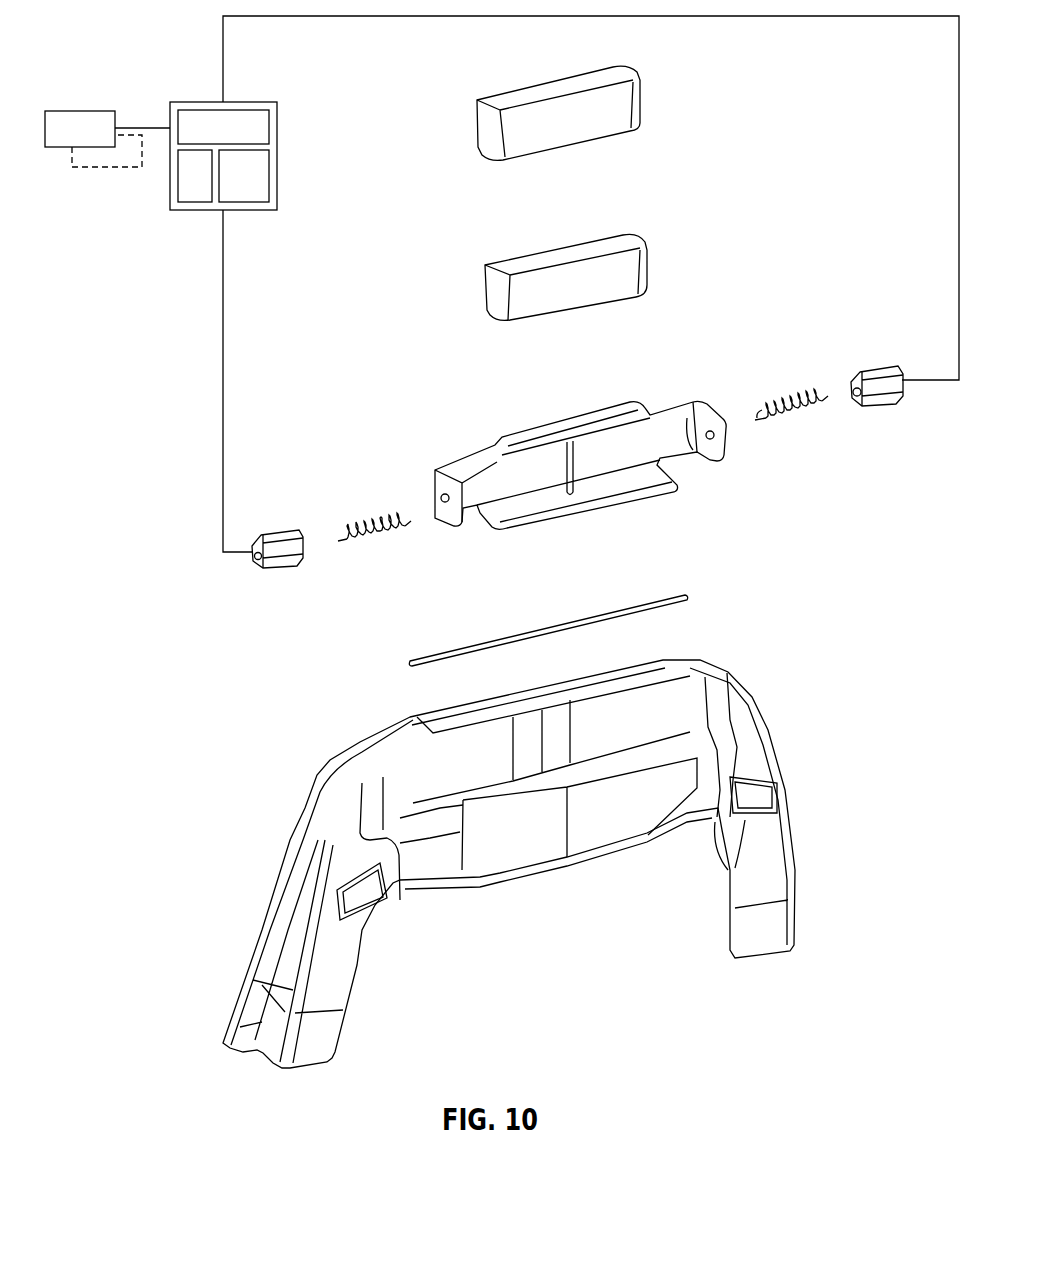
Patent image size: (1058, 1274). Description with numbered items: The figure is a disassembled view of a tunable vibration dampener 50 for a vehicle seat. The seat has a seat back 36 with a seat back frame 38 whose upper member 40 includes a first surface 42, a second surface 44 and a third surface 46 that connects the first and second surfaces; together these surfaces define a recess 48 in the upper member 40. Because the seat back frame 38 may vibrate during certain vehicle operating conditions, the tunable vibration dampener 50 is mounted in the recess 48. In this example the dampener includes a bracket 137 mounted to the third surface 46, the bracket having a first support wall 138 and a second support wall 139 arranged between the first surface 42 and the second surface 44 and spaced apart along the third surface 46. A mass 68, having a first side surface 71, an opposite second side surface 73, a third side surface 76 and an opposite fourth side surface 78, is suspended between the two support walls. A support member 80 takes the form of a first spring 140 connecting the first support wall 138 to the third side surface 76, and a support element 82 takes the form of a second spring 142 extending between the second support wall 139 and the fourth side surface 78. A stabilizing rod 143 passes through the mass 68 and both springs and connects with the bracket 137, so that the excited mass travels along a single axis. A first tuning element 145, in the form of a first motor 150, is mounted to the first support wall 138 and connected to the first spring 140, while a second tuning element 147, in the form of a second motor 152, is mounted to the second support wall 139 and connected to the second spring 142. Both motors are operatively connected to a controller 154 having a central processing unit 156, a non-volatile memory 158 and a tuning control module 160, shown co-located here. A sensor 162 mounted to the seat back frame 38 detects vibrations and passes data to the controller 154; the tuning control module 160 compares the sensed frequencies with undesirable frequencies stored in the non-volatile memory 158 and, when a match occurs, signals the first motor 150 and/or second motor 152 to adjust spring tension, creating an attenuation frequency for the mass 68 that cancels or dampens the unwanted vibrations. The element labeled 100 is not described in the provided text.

The seat back 36 is at (268, 848).
The seat back frame 38 is at (262, 918).
The upper member 40 is at (655, 662).
The first surface 42 is at (733, 716).
The second surface 44 is at (772, 796).
The third surface 46 is at (433, 770).
The recess 48 is at (400, 775).
The tunable vibration dampener 50 is at (775, 265).
The mass 68 is at (585, 298).
The first side surface 71 is at (510, 268).
The second side surface 73 is at (538, 320).
The third side surface 76 is at (493, 297).
The fourth side surface 78 is at (650, 265).
The support member 80 is at (352, 547).
The support element 82 is at (800, 385).
The battery pack 100 is at (587, 133).
The bracket 137 is at (693, 474).
The first support wall 138 is at (440, 483).
The second support wall 139 is at (698, 407).
The first spring 140 is at (395, 527).
The second spring 142 is at (775, 398).
The stabilizing rod 143 is at (480, 644).
The first tuning element 145 is at (257, 577).
The second tuning element 147 is at (882, 408).
The first motor 150 is at (270, 540).
The second motor 152 is at (880, 378).
The controller 154 is at (148, 224).
The central processing unit 156 is at (198, 108).
The non-volatile memory 158 is at (178, 173).
The tuning control module 160 is at (277, 172).
The sensor 162 is at (80, 110).